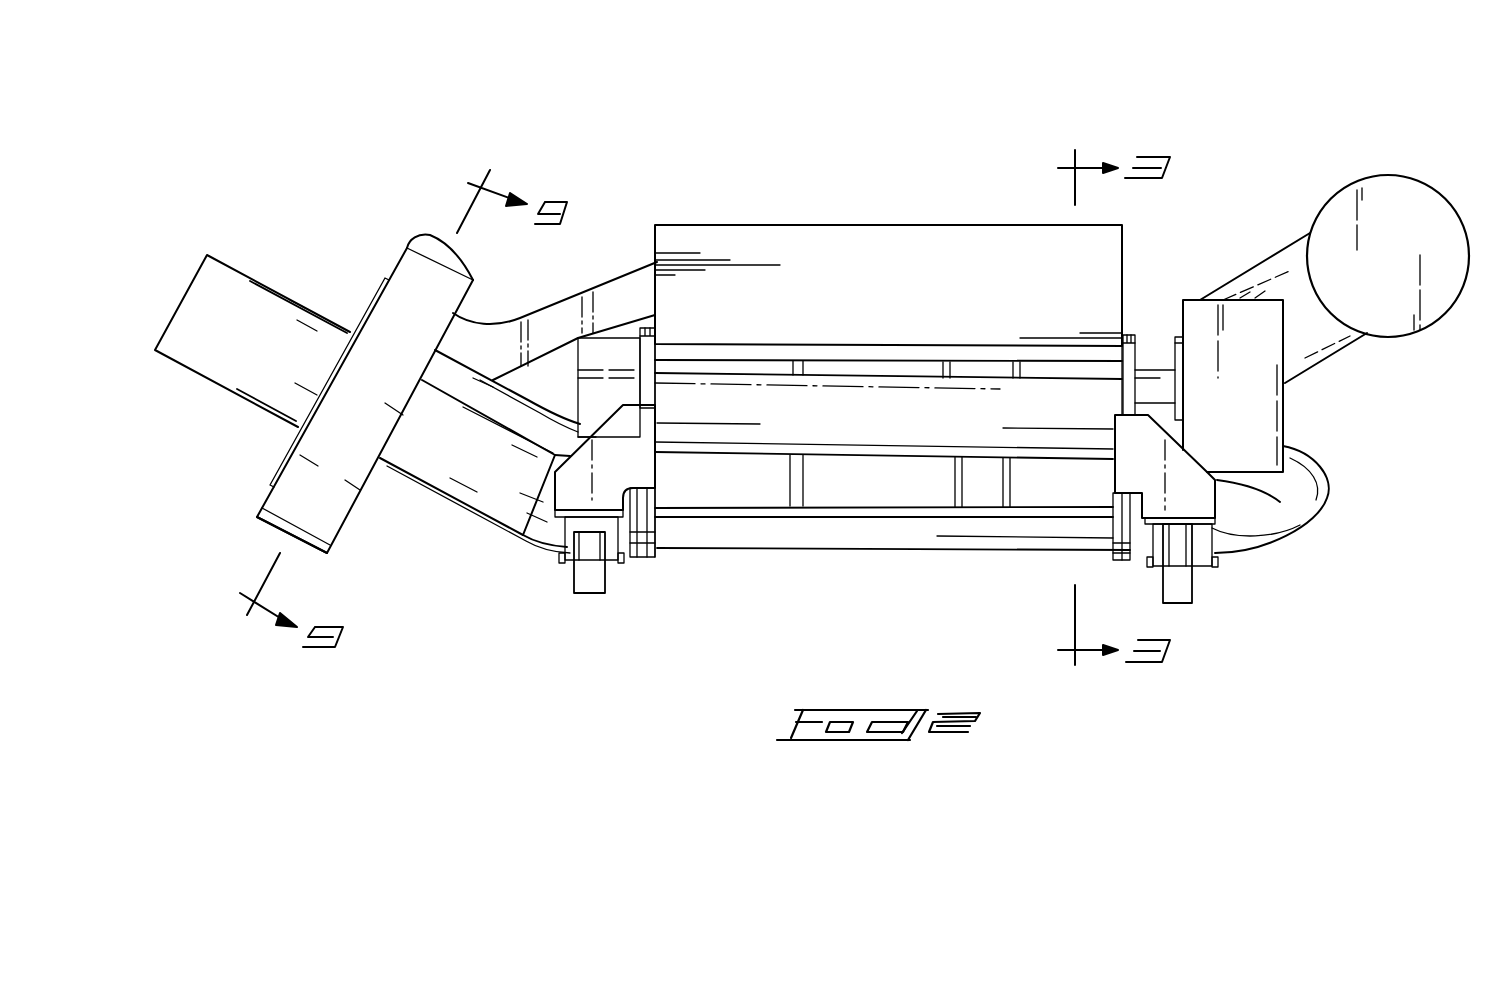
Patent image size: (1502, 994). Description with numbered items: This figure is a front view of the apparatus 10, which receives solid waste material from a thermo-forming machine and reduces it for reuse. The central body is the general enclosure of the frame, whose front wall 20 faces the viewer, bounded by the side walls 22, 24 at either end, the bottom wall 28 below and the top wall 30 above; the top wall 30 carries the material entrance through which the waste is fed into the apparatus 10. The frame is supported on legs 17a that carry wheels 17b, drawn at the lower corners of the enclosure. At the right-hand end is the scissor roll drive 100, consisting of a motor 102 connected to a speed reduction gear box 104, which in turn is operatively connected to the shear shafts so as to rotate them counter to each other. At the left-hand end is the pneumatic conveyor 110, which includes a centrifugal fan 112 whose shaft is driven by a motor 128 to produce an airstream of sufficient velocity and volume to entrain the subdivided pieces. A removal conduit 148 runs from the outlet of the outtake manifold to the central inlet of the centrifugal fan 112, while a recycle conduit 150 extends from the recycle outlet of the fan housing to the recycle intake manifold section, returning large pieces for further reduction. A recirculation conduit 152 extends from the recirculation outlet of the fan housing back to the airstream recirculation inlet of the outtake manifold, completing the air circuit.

The apparatus 10 is at (792, 140).
The front wall 20 is at (897, 305).
The side wall 22 is at (655, 243).
The side wall 24 is at (1122, 272).
The bottom wall 28 is at (830, 533).
The top wall 30 is at (958, 225).
The legs 17a is at (622, 450).
The wheels 17b is at (595, 595).
The scissor roll drive 100 is at (1336, 182).
The motor 102 is at (1423, 233).
The speed reduction gear box 104 is at (1248, 434).
The pneumatic conveyor 110 is at (370, 228).
The centrifugal fan 112 is at (358, 526).
The motor 128 is at (254, 342).
The removal conduit 148 is at (490, 467).
The recycle conduit 150 is at (558, 328).
The recirculation conduit 152 is at (1280, 507).